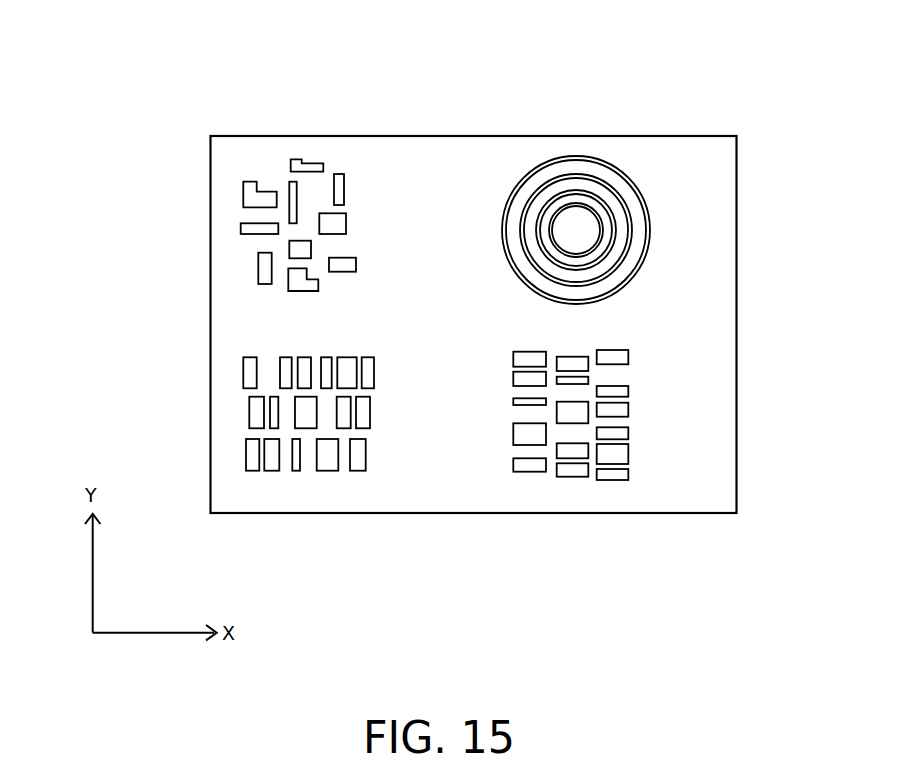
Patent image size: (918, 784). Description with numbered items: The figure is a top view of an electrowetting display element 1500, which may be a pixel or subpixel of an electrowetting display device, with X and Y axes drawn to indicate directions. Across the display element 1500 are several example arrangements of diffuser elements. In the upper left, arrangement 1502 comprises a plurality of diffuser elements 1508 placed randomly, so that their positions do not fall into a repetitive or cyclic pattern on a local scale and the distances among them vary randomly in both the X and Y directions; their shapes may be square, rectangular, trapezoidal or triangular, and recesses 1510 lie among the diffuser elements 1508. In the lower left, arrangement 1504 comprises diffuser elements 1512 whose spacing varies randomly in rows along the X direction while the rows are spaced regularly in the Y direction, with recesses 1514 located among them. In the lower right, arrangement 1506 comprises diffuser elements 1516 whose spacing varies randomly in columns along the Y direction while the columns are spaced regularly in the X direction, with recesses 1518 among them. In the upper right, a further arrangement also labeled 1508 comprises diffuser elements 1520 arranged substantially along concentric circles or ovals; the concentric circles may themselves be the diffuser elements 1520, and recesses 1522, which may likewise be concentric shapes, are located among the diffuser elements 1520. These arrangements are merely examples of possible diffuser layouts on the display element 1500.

The electrowetting display element 1500 is at (475, 317).
The arrangement 1502 is at (305, 143).
The arrangement 1504 is at (323, 497).
The arrangement 1506 is at (575, 498).
The diffuser elements 1508 is at (240, 228).
The recesses 1510 is at (282, 280).
The diffuser elements 1512 is at (246, 458).
The recesses 1514 is at (347, 471).
The diffuser elements 1516 is at (613, 480).
The recesses 1518 is at (620, 375).
The diffuser elements 1520 is at (515, 193).
The recesses 1522 is at (620, 183).